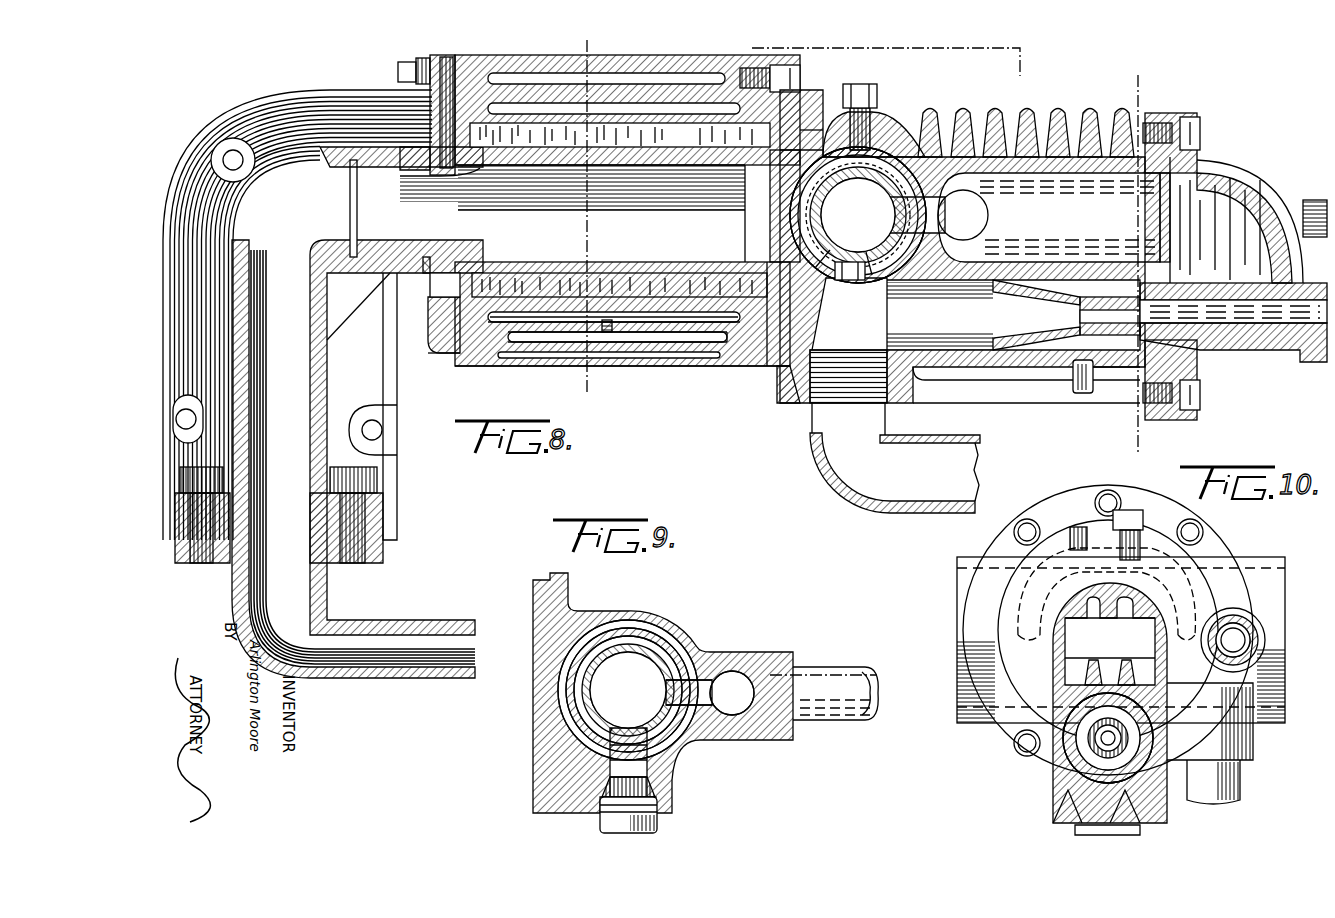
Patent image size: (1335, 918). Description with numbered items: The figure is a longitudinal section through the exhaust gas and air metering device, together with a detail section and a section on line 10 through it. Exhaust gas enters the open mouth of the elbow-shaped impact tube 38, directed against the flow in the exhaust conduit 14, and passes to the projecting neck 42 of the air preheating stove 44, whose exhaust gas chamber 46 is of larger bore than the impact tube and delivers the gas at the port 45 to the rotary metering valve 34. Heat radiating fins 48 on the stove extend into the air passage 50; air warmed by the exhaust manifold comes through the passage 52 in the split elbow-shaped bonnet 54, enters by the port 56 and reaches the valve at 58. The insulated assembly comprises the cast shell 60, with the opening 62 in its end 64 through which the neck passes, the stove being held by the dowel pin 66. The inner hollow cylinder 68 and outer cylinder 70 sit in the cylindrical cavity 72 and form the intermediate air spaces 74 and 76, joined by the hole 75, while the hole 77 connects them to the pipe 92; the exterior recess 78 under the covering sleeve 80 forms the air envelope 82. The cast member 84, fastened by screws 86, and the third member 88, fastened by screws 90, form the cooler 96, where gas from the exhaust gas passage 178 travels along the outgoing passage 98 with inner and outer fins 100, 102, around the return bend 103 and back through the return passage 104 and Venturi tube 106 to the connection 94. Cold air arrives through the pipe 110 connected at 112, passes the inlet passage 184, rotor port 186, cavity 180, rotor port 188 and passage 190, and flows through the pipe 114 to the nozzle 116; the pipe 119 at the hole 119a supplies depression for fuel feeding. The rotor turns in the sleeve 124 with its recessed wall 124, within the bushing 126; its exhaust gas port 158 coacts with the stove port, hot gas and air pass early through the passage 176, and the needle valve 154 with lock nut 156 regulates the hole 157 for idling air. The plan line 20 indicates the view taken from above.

In FIG. 8, the section line 10— 10 is at (1127, 90).
In FIG. 8, the exhaust conduit 14 is at (575, 47).
In FIG. 8, the line 20— 20 is at (1024, 70).
In FIG. 8, the rotary metering valve 34 is at (845, 280).
In FIG. 9, the rotary metering valve 34 is at (620, 625).
In FIG. 8, the impact tube 38 is at (388, 640).
In FIG. 8, the projecting neck 42 is at (415, 255).
In FIG. 8, the air preheating stove 44 is at (550, 258).
In FIG. 8, the exhaust gas port 45 is at (780, 226).
In FIG. 8, the exhaust gas chamber 46 is at (600, 213).
In FIG. 8, the heat radiating fins 48 is at (700, 282).
In FIG. 8, the air passage 50 is at (740, 134).
In FIG. 8, the passage 52 is at (372, 373).
In FIG. 8, the split elbow-shaped bonnet 54 is at (398, 432).
In FIG. 8, the port 56 is at (435, 288).
In FIG. 8, the preheated air delivery point 58 is at (832, 112).
In FIG. 8, the cast shell 60 is at (548, 75).
In FIG. 8, the opening 62 is at (462, 255).
In FIG. 8, the end of shell 64 is at (438, 312).
In FIG. 8, the dowel pin 66 is at (442, 98).
In FIG. 8, the inner hollow cylinder 68 is at (650, 300).
In FIG. 8, the outer hollow cylinder 70 is at (530, 358).
In FIG. 8, the cylindrical cavity 72 is at (455, 365).
In FIG. 8, the intermediate air space 74 is at (572, 312).
In FIG. 8, the hole 75 is at (607, 318).
In FIG. 8, the intermediate air space 76 is at (720, 345).
In FIG. 8, the hole 77 is at (775, 368).
In FIG. 8, the exterior recess 78 is at (566, 358).
In FIG. 8, the cylindrical covering sleeve 80 is at (760, 368).
In FIG. 8, the insulating air envelope 82 is at (660, 355).
In FIG. 8, the cast member 84 is at (915, 140).
In FIG. 8, the screws 86 is at (780, 78).
In FIG. 8, the third member 88 is at (1240, 150).
In FIG. 8, the screws 90 is at (1195, 127).
In FIG. 8, the pipe 92 is at (928, 480).
In FIG. 10, the pipe 92 is at (1075, 832).
In FIG. 8, the pipe connection 94 is at (880, 418).
In FIG. 8, the cooler 96 is at (1092, 215).
In FIG. 8, the outgoing passage 98 is at (1120, 130).
In FIG. 8, the inner fins 100 is at (1000, 178).
In FIG. 8, the outer fins 102 is at (1028, 150).
In FIG. 8, the return bend 103 is at (1250, 263).
In FIG. 8, the return passage 104 is at (985, 345).
In FIG. 8, the Venturi tube 106 is at (1022, 347).
In FIG. 9, the pipe 110 is at (660, 830).
In FIG. 10, the pipe 110 is at (1228, 790).
In FIG. 9, the pipe connection 112 is at (668, 798).
In FIG. 9, the pipe 114 is at (840, 680).
In FIG. 8, the nozzle 116 is at (1090, 315).
In FIG. 8, the pipe 119 is at (1083, 396).
In FIG. 8, the hole 119a is at (1094, 375).
In FIG. 8, the sleeve 124 is at (825, 300).
In FIG. 8, the bushing 126 is at (928, 150).
In FIG. 8, the needle valve 154 is at (862, 84).
In FIG. 8, the lock nut 156 is at (878, 100).
In FIG. 8, the hole 157 is at (835, 118).
In FIG. 8, the exhaust gas port 158 is at (833, 212).
In FIG. 8, the passage 176 is at (840, 295).
In FIG. 8, the exhaust gas passage 178 is at (938, 215).
In FIG. 9, the cavity 180 is at (588, 692).
In FIG. 9, the passage 184 is at (650, 752).
In FIG. 9, the rotor port 186 is at (630, 740).
In FIG. 9, the rotor port 188 is at (662, 688).
In FIG. 9, the passage 190 is at (728, 665).